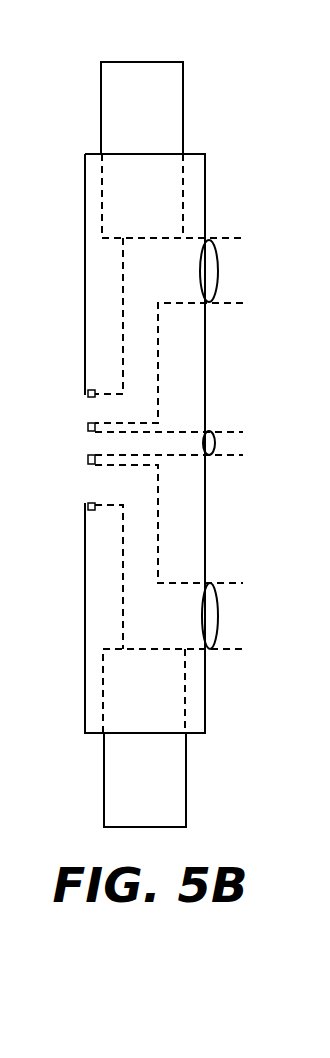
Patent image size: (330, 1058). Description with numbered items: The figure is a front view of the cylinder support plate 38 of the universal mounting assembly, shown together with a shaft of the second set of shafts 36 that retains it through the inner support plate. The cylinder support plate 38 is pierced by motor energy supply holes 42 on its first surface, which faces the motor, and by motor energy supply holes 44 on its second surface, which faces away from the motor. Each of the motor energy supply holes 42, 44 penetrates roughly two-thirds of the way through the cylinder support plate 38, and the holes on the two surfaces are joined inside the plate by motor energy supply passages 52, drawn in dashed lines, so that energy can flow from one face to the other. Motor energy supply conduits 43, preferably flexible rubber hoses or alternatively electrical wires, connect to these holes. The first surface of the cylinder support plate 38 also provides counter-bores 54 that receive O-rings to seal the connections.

The second set of shafts 36 is at (173, 761).
The cylinder support plate 38 is at (197, 686).
The motor energy supply holes 42 is at (210, 433).
The motor energy supply conduits 43 is at (212, 300).
The motor energy supply holes 44 is at (207, 606).
The motor energy supply passages 52 is at (137, 577).
The counter-bores 54 is at (88, 393).